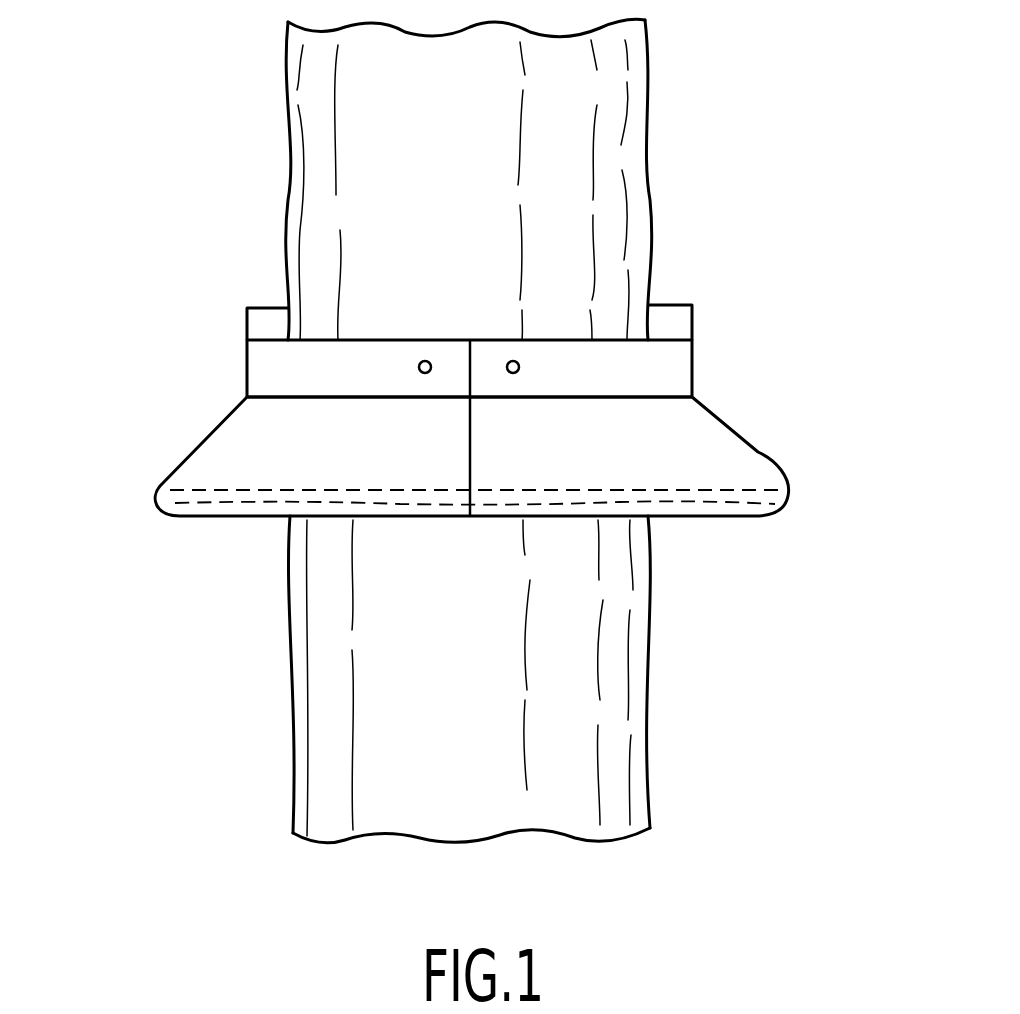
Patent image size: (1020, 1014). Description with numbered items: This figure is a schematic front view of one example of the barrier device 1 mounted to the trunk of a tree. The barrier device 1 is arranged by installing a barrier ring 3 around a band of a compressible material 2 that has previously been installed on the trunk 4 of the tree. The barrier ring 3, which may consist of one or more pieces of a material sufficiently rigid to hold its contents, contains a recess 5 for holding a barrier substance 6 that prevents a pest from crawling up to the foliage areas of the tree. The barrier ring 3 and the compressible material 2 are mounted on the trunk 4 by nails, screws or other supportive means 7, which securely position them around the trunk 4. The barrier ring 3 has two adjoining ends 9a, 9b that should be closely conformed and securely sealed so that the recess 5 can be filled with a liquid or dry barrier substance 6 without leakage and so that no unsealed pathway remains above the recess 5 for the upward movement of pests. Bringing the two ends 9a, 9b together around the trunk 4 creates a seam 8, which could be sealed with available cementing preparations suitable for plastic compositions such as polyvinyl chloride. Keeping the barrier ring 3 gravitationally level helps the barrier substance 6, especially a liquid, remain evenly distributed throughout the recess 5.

The barrier device 1 is at (134, 583).
The compressible material 2 is at (673, 315).
The barrier ring 3 is at (514, 456).
The trunk 4 is at (608, 172).
The recess 5 is at (762, 492).
The barrier substance 6 is at (680, 506).
The supportive means 7 is at (508, 362).
The seam 8 is at (469, 484).
The end 9a is at (470, 428).
The end 9b is at (474, 451).